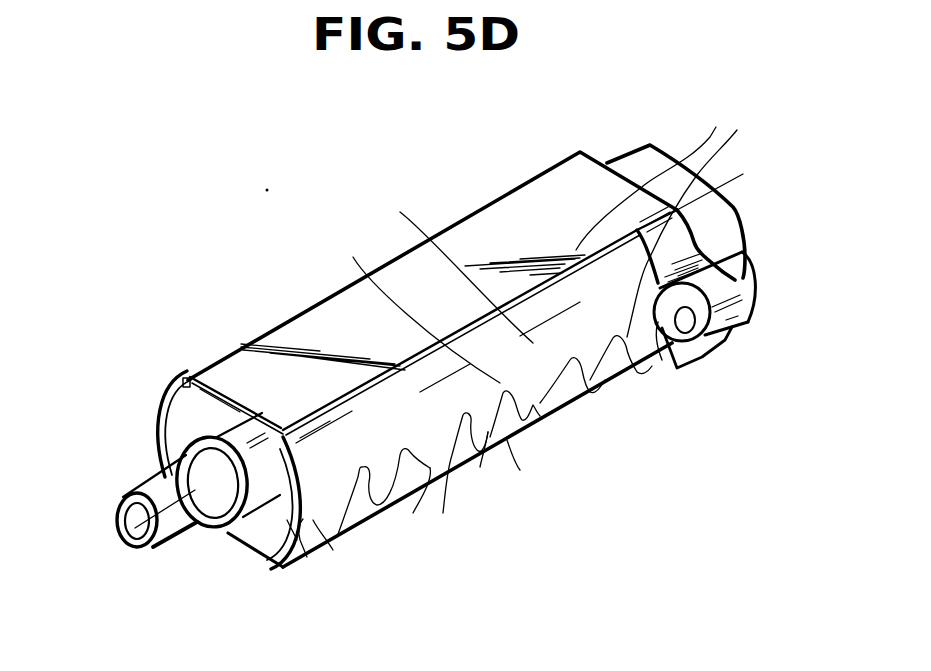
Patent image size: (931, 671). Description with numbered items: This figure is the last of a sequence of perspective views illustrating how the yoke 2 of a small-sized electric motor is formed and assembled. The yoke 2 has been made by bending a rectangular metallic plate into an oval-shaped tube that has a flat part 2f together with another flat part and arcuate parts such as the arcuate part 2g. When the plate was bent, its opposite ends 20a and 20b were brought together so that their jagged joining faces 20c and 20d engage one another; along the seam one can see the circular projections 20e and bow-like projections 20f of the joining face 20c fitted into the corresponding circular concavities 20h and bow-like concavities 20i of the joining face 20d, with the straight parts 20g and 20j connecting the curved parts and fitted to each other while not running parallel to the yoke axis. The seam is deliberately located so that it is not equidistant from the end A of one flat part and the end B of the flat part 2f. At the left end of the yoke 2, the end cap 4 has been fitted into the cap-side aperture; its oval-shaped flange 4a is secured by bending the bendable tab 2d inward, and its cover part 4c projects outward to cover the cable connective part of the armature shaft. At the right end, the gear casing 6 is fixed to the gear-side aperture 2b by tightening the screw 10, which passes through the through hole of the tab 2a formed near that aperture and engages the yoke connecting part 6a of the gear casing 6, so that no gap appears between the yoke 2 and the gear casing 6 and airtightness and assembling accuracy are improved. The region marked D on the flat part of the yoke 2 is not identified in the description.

The yoke 2 is at (442, 230).
The tab 2a is at (740, 253).
The gear-side aperture 2b is at (567, 207).
The bendable tab 2d is at (170, 393).
The flat part 2f is at (487, 250).
The arcuate part 2g is at (450, 264).
The end cap 4 is at (193, 370).
The flange 4a is at (190, 417).
The cover part 4c is at (147, 557).
The gear casing 6 is at (636, 165).
The yoke connecting part 6a is at (753, 303).
The screw 10 is at (690, 363).
The opposite end 20a is at (410, 303).
The opposite end 20b is at (563, 402).
The joining face 20c is at (333, 550).
The joining face 20d is at (307, 557).
The circular projections 20e is at (520, 470).
The bow-like projections 20f is at (413, 513).
The straight parts 20g is at (738, 181).
The circular concavities 20h is at (480, 467).
The bow-like concavities 20i is at (443, 513).
The straight parts 20j is at (350, 507).
The end of flat part A is at (627, 367).
The end of flat part B is at (717, 126).
The region D is at (287, 313).